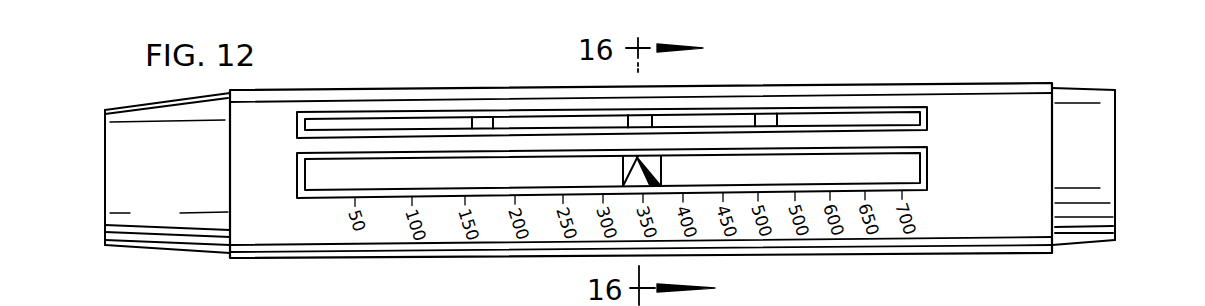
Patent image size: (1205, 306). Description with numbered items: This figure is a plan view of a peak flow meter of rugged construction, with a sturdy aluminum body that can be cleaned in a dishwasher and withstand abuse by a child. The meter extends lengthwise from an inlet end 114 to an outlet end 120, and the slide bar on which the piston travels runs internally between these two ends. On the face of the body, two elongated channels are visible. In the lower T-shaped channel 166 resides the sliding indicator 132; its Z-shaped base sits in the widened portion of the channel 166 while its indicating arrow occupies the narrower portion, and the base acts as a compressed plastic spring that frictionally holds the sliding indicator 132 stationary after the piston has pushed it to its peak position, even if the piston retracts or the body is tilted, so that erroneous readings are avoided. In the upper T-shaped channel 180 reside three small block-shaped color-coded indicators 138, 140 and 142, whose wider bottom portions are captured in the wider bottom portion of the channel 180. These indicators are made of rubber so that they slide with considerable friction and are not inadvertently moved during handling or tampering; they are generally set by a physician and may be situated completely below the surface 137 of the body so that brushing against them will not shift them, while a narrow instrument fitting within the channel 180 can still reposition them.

The inlet end 114 is at (107, 225).
The outlet end 120 is at (1115, 201).
The sliding indicator 132 is at (662, 173).
The surface 137 is at (1043, 132).
The color-coded indicator 138 is at (767, 112).
The color-coded indicator 140 is at (651, 117).
The color-coded indicator 142 is at (481, 117).
The T-shaped channel 166 is at (918, 167).
The T-shaped channel 180 is at (907, 116).